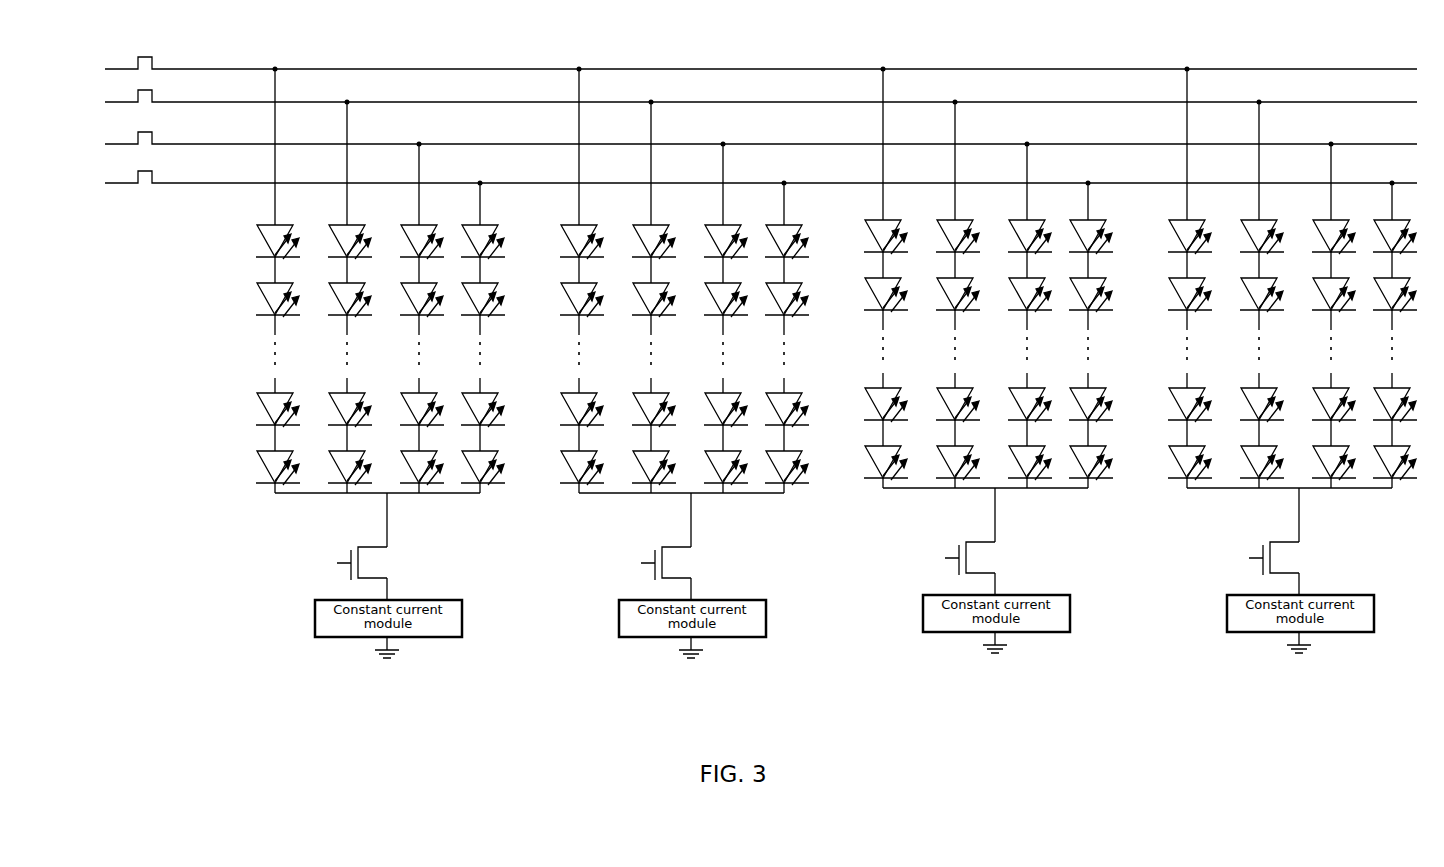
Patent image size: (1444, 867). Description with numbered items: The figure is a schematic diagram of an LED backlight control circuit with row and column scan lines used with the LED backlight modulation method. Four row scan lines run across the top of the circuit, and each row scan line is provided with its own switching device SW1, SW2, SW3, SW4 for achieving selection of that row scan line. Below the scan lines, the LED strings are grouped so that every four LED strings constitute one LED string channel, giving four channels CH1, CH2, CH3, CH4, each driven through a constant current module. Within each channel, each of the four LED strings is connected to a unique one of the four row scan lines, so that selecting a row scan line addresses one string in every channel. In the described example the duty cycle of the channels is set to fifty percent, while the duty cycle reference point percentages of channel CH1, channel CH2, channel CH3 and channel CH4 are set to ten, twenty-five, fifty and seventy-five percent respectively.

The row scan line switching device SW1 is at (732, 68).
The row scan line switching device SW2 is at (732, 101).
The row scan line switching device SW3 is at (732, 143).
The row scan line switching device SW4 is at (732, 182).
The LED string channel CH1 is at (339, 556).
The LED string channel CH2 is at (643, 556).
The LED string channel CH3 is at (946, 552).
The LED string channel CH4 is at (1250, 552).